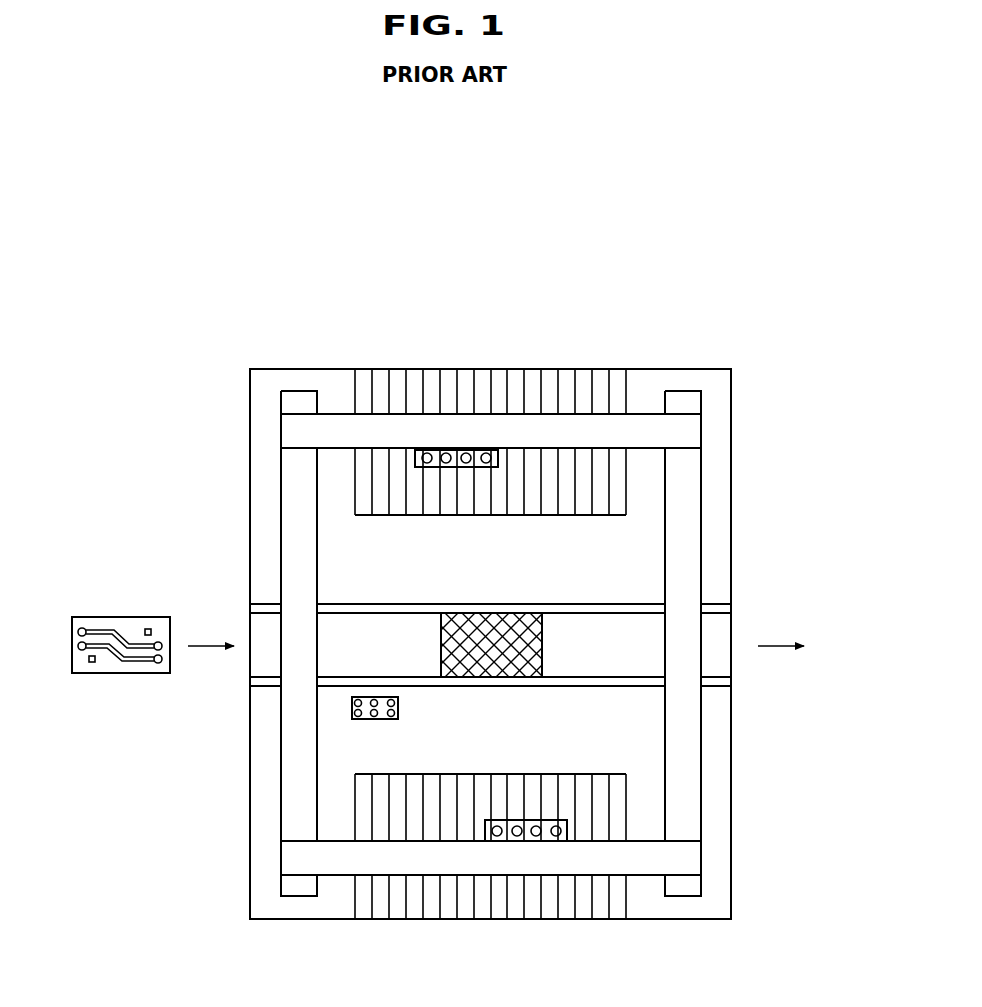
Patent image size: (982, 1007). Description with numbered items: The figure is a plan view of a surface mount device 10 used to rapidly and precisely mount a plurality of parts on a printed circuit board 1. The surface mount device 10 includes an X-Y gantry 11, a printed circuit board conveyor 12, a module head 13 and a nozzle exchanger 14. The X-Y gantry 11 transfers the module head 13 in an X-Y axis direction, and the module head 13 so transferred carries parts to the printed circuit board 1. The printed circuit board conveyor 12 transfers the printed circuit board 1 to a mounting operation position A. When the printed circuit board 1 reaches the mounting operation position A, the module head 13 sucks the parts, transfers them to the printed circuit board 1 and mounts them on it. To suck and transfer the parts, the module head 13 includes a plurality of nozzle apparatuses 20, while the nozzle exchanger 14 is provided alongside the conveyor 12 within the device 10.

The printed circuit board 1 is at (132, 625).
The surface mount device 10 is at (462, 225).
The X-Y gantry 11 is at (690, 528).
The printed circuit board conveyor 12 is at (648, 608).
The module head 13 is at (468, 452).
The nozzle exchanger 14 is at (352, 712).
The nozzle apparatus 20 is at (446, 452).
The mounting operation position A is at (493, 630).